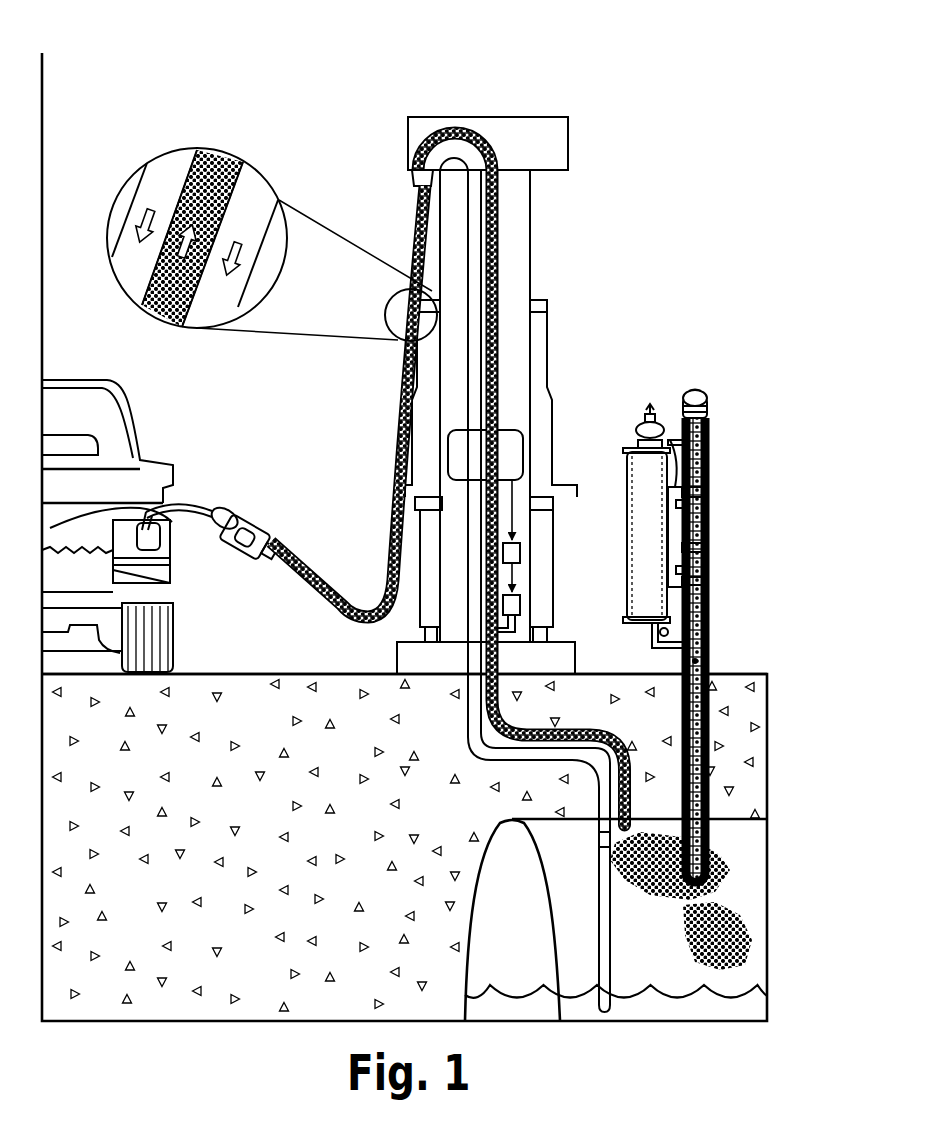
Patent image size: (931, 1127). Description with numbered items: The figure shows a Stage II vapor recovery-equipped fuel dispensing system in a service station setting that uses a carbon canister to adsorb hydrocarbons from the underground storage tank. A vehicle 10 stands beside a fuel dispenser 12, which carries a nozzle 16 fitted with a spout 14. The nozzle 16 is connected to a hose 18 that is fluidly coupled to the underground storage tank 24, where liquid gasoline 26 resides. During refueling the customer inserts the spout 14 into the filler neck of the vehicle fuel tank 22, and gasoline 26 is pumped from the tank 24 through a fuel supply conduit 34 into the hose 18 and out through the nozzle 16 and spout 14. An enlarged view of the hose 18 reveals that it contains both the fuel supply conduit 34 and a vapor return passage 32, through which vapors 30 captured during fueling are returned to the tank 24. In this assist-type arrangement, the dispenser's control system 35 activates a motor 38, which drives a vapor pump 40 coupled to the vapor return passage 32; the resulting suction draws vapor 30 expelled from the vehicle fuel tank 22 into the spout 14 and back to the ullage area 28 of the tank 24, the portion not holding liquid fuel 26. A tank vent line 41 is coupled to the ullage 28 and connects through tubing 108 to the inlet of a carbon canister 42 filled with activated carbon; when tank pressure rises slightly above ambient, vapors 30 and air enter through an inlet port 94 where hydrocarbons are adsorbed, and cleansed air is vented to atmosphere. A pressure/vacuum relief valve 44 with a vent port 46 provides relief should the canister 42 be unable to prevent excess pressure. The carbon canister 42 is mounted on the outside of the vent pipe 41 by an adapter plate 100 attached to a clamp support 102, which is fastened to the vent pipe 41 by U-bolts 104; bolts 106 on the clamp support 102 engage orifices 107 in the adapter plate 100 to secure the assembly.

The vehicle 10 is at (60, 425).
The fuel dispenser 12 is at (513, 78).
The spout 14 is at (199, 499).
The nozzle 16 is at (236, 503).
The hose 18 is at (407, 400).
The vehicle fuel tank 22 is at (113, 570).
The underground storage tank 24 is at (681, 938).
The liquid gasoline 26 is at (491, 756).
The ullage area 28 is at (741, 877).
The vapors 30 is at (150, 307).
The vapor return passage 32 is at (498, 262).
The fuel supply conduit 34 is at (172, 172).
The control system 35 is at (501, 432).
The motor 38 is at (521, 545).
The vapor pump 40 is at (521, 597).
The tank vent line 41 is at (704, 640).
The carbon canister 42 is at (622, 507).
The pressure/vacuum relief valve 44 is at (706, 400).
The vent port 46 is at (697, 388).
The inlet port 94 is at (648, 641).
The adapter plate 100 is at (672, 550).
The clamp support 102 is at (675, 487).
The U-bolts 104 is at (687, 493).
The bolts 106 is at (680, 533).
The orifices 107 is at (668, 503).
The tubing 108 is at (682, 645).